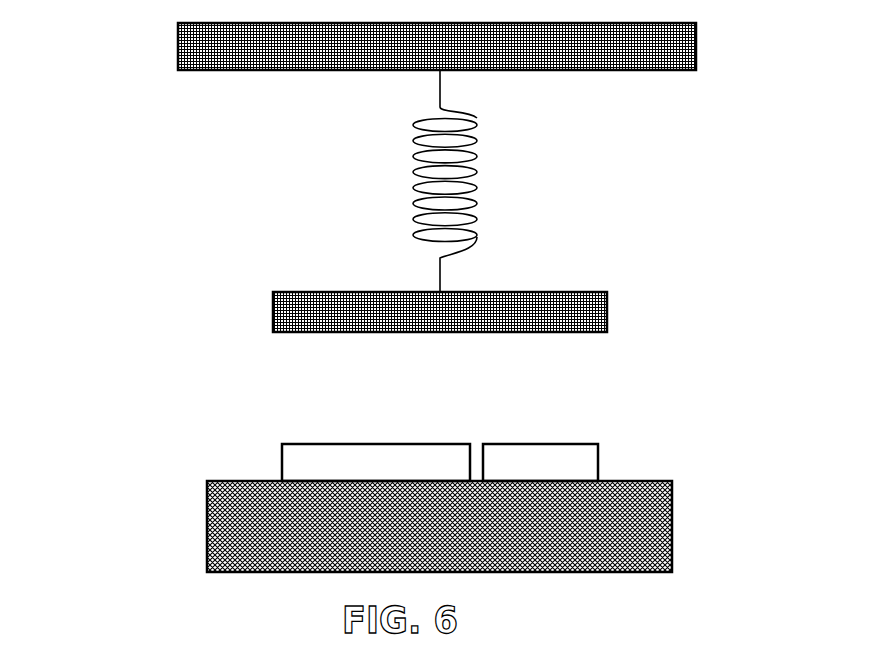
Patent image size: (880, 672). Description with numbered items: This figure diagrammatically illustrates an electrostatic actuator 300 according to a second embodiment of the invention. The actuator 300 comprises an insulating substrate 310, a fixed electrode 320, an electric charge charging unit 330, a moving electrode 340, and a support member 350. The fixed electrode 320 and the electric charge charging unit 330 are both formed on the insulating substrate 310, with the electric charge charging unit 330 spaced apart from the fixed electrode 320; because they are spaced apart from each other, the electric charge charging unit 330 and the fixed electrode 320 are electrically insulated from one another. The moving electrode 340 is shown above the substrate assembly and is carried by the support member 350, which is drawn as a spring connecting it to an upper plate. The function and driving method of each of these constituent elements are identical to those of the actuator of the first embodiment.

The electrostatic actuator 300 is at (48, 58).
The insulating substrate 310 is at (637, 525).
The fixed electrode 320 is at (572, 470).
The electric charge charging unit 330 is at (302, 467).
The moving electrode 340 is at (288, 312).
The support member 350 is at (468, 182).